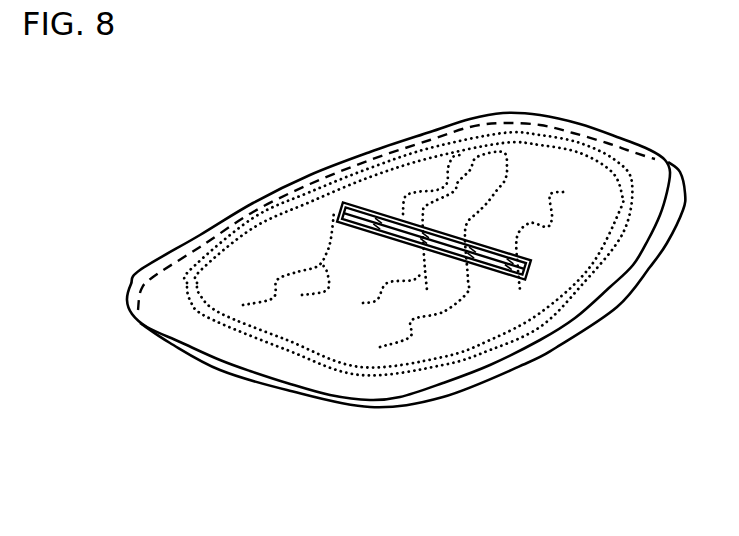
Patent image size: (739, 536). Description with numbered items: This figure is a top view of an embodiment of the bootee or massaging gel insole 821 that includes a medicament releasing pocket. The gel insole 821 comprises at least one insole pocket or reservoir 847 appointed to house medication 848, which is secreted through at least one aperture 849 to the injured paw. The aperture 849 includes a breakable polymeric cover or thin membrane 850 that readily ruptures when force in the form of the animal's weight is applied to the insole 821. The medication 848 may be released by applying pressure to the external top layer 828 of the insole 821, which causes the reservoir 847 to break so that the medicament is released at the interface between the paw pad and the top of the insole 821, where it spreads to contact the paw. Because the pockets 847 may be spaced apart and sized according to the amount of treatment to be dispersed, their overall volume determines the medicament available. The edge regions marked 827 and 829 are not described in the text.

The gel insole 821 is at (426, 136).
The side wall 827 is at (614, 305).
The external top layer 828 is at (163, 318).
The rim 829 is at (373, 400).
The insole pocket/reservoir 847 is at (602, 213).
The medication 848 is at (485, 177).
The aperture 849 is at (375, 232).
The breakable polymeric cover or thin membrane 850 is at (398, 239).